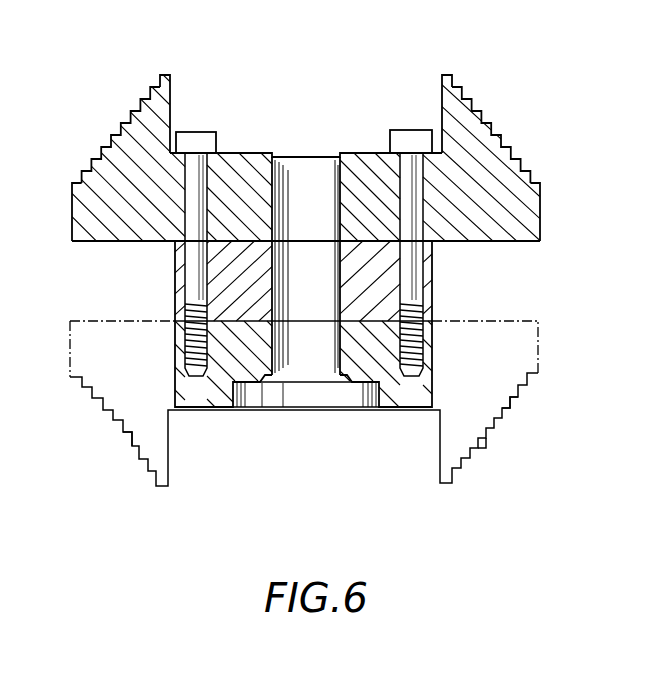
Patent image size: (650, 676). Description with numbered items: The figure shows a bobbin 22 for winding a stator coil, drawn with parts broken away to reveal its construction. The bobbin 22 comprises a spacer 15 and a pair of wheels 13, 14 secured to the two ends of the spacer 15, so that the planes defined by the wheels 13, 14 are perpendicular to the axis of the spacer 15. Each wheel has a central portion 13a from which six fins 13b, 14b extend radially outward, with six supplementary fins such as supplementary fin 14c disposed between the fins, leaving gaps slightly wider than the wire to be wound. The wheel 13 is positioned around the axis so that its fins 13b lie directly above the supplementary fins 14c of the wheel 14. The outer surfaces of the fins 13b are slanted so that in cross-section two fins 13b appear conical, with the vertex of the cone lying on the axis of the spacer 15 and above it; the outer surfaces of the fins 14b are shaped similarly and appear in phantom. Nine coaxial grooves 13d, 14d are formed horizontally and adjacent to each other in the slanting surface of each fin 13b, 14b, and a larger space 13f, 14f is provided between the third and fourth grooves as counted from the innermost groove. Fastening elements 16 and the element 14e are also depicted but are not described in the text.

The wheel 13 is at (250, 130).
The central portion 13a is at (342, 155).
The fin 13b is at (73, 221).
The coaxial groove 13d is at (107, 157).
The larger space 13f is at (131, 121).
The wheel 14 is at (119, 435).
The fin 14b is at (532, 350).
The supplementary fin 14c is at (403, 400).
The coaxial groove 14d is at (507, 409).
The cylindrical boss 14e is at (252, 384).
The larger space 14f is at (132, 436).
The spacer 15 is at (390, 281).
The bolt 16 is at (410, 138).
The bobbin 22 is at (545, 66).